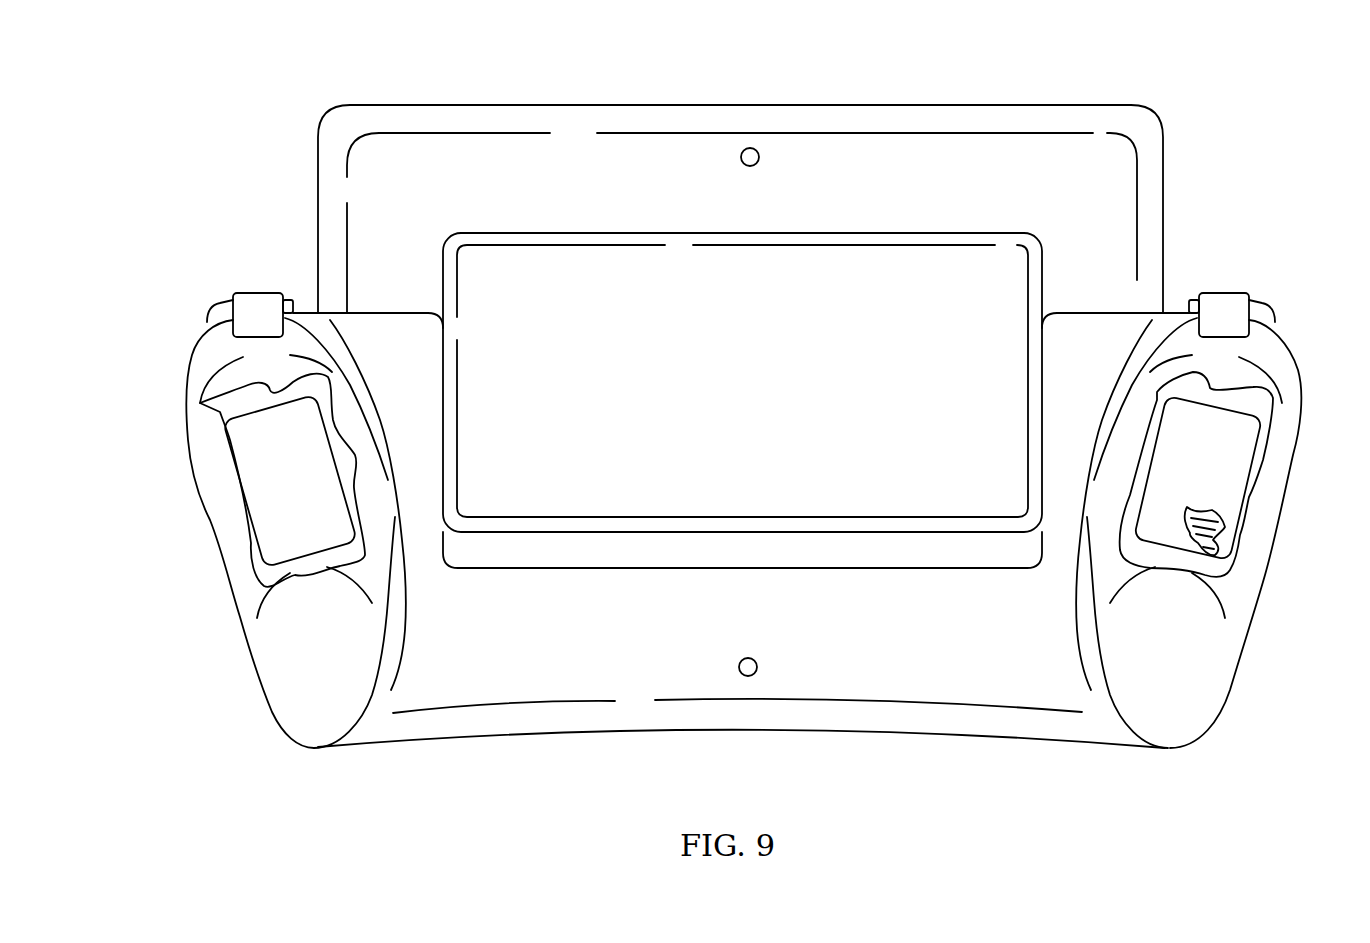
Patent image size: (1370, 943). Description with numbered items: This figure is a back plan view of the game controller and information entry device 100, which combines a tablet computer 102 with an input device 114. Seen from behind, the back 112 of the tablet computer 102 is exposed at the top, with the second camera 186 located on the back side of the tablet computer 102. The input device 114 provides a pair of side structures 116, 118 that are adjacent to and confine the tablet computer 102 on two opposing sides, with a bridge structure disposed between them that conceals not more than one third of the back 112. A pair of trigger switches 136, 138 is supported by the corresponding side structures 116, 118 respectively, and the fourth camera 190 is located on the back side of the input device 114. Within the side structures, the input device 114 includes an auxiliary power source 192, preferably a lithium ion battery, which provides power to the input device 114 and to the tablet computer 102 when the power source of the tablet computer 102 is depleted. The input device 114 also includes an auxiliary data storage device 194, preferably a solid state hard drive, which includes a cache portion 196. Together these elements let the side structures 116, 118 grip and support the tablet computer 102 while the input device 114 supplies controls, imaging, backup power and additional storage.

The game controller and information entry device 100 is at (851, 78).
The tablet computer 102 is at (1199, 181).
The back 112 is at (668, 103).
The input device 114 is at (752, 735).
The side structure 116 is at (1248, 568).
The side structure 118 is at (237, 523).
The trigger switch 136 is at (1222, 310).
The trigger switch 138 is at (260, 310).
The second camera 186 is at (749, 148).
The fourth camera 190 is at (758, 667).
The auxiliary power source 192 is at (252, 440).
The auxiliary data storage device 194 is at (1233, 423).
The cache portion 196 is at (1215, 540).